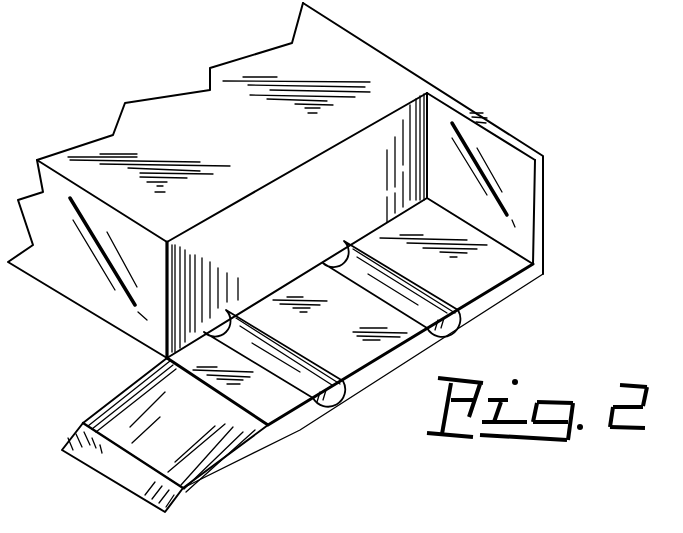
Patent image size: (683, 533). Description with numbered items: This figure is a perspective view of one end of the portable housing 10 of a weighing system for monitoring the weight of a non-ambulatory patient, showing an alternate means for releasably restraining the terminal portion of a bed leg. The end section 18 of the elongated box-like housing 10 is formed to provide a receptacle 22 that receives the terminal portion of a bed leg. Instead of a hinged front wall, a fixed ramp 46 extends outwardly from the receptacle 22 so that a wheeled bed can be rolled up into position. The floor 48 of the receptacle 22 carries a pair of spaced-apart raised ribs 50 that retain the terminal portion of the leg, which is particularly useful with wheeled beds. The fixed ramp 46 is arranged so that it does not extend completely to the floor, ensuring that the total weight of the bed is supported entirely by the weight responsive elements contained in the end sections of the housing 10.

The portable housing 10 is at (489, 82).
The end section 18 is at (373, 70).
The receptacle 22 is at (498, 272).
The fixed ramp 46 is at (227, 438).
The floor 48 is at (363, 373).
The raised ribs 50 is at (373, 289).